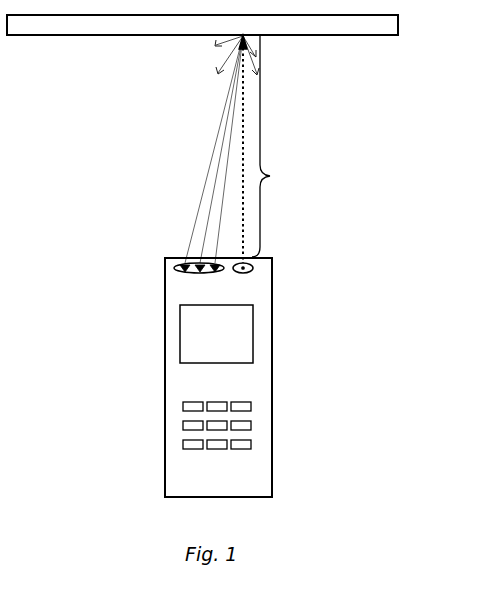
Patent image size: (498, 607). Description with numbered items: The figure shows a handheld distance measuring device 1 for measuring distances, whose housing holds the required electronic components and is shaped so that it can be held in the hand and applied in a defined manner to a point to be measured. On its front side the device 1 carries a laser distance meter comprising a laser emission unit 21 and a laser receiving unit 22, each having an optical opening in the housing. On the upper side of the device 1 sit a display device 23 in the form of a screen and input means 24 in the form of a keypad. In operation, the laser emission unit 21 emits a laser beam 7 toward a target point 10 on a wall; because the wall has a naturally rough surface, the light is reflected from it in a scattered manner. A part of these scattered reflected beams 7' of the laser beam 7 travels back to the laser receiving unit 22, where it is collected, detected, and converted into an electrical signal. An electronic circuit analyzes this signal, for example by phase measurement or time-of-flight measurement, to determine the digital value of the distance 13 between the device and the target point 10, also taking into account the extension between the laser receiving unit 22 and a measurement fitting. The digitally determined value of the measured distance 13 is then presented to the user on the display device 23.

The handheld distance measuring device 1 is at (148, 247).
The laser beam 7 is at (307, 149).
The scattered reflected beams 7' is at (181, 149).
The target point 10 is at (245, 36).
The distance 13 is at (277, 146).
The laser emission unit 21 is at (250, 268).
The laser receiving unit 22 is at (195, 270).
The display device 23 is at (188, 327).
The input means 24 is at (187, 427).